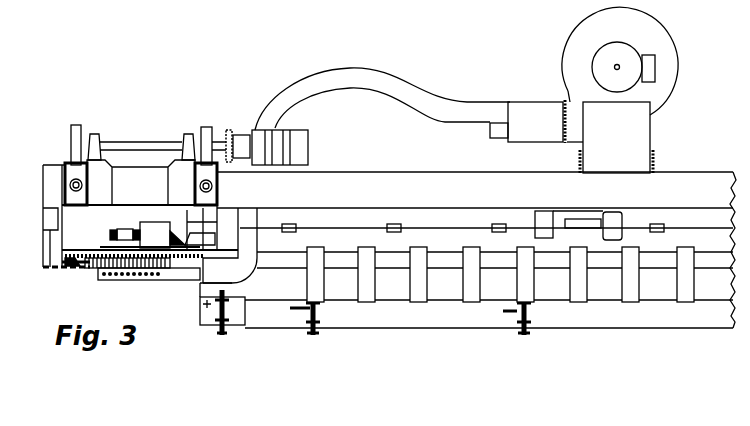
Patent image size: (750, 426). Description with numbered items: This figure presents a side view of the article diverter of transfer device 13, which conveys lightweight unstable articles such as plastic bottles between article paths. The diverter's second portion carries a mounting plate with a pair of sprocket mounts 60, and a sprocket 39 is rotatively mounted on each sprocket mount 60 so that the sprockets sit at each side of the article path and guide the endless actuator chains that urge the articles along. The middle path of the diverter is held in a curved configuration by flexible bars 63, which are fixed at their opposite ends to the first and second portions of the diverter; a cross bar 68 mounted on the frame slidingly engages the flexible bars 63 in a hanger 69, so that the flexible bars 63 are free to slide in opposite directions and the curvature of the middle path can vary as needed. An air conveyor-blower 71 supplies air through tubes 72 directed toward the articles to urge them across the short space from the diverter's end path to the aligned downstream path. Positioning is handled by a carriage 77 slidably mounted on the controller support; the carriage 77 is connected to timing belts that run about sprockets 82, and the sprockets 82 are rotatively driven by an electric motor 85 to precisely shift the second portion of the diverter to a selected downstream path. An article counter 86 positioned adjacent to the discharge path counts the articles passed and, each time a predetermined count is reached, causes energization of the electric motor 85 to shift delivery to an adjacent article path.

The device 13 is at (266, 74).
The sprocket 39 is at (100, 270).
The sprocket mount 60 is at (112, 228).
The flexible bar 63 is at (415, 243).
The cross bar 68 is at (598, 225).
The hanger 69 is at (625, 222).
The air conveyor-blower 71 is at (548, 100).
The tube 72 is at (381, 72).
The carriage 77 is at (228, 218).
The sprocket 82 is at (76, 125).
The electric motor 85 is at (309, 146).
The article counter 86 is at (67, 268).